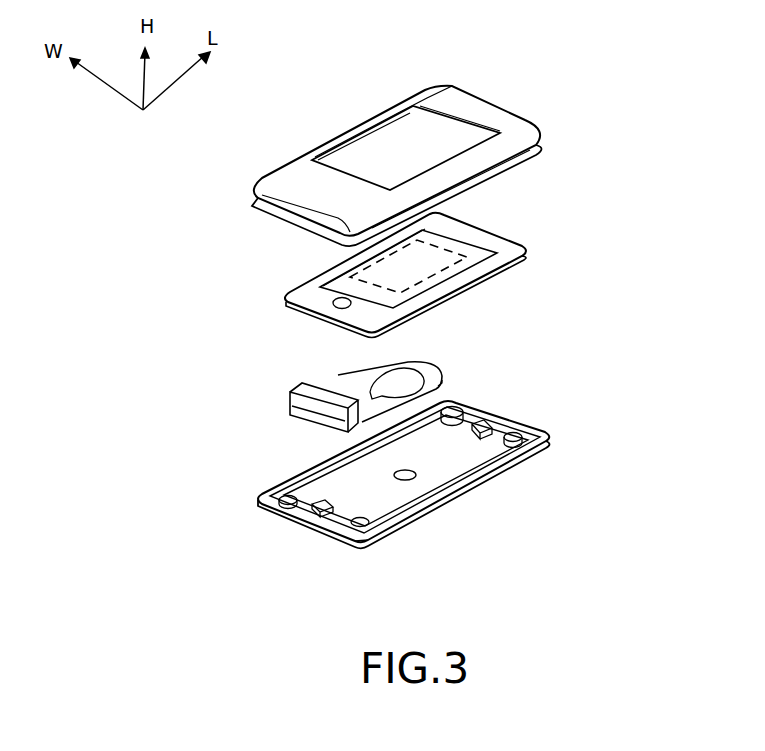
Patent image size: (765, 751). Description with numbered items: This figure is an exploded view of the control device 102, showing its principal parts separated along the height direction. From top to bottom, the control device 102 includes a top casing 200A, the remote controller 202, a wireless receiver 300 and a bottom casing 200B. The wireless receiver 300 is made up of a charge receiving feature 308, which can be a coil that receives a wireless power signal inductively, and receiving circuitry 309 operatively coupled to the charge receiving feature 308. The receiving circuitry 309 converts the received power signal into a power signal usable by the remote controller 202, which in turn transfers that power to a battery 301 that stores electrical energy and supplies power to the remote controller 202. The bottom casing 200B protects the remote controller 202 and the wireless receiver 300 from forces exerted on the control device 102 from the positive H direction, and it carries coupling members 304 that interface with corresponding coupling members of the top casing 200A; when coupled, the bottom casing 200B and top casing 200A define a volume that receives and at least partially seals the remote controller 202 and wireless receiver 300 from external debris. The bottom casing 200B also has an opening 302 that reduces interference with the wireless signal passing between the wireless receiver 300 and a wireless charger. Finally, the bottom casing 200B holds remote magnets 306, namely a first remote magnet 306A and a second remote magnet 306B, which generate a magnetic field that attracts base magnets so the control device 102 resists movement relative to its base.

The control device 102 is at (547, 85).
The top casing 200A is at (523, 142).
The bottom casing 200B is at (533, 447).
The remote controller 202 is at (470, 273).
The battery 301 is at (478, 228).
The wireless receiver 300 is at (300, 403).
The charge receiving feature 308 is at (357, 373).
The receiving circuitry 309 is at (320, 410).
The remote magnets 306 is at (480, 418).
The first remote magnet 306A is at (490, 424).
The second remote magnet 306B is at (317, 508).
The opening 302 is at (417, 475).
The coupling members 304 is at (372, 527).